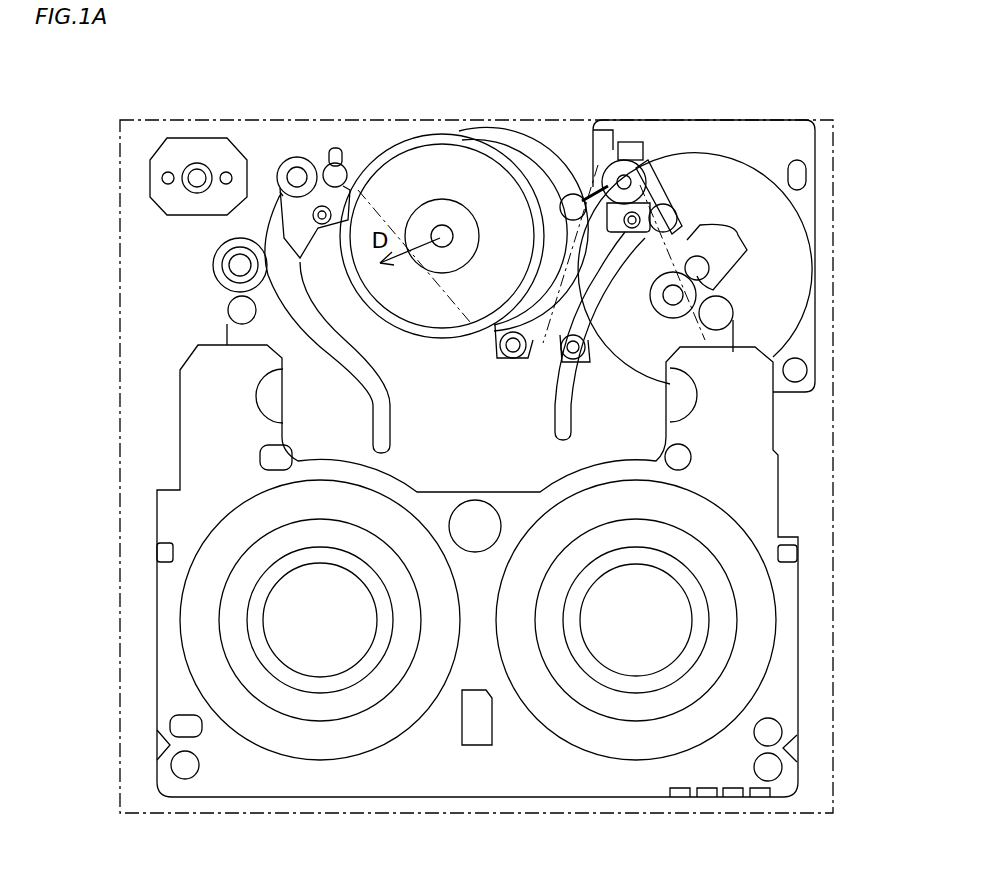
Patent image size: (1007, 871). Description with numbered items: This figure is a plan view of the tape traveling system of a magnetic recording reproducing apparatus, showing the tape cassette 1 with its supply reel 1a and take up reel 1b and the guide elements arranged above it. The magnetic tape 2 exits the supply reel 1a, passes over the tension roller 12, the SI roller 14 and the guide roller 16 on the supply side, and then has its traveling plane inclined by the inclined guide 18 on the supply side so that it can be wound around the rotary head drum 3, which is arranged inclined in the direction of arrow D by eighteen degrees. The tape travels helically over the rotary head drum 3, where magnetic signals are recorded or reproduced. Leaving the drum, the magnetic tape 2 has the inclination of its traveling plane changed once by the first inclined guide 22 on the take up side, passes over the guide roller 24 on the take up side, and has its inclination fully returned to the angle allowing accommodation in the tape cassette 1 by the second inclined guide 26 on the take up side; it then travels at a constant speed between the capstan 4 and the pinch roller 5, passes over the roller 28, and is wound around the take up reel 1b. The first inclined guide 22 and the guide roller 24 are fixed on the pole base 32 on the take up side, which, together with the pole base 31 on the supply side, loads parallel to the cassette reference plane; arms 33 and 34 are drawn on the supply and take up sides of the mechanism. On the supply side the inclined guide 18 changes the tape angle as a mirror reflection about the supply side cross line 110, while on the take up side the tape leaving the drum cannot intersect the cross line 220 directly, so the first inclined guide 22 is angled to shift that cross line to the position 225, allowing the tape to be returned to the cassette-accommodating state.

The tape cassette 1 is at (783, 692).
The supply reel 1a is at (200, 627).
The take up reel 1b is at (760, 603).
The magnetic tape 2 is at (257, 226).
The rotary head drum 3 is at (468, 162).
The capstan 4 is at (697, 268).
The pinch roller 5 is at (690, 293).
The tension roller 12 is at (237, 310).
The SI roller 14 is at (225, 264).
The guide roller on the supply side 16 is at (296, 157).
The inclined guide on the supply side 18 is at (344, 165).
The first inclined guide on the take up side 22 is at (571, 194).
The guide roller on the take up side 24 is at (648, 172).
The second inclined guide on the take up side 26 is at (675, 232).
The roller 28 is at (717, 315).
The pole base on the supply side 31 is at (276, 196).
The pole base on the take up side 32 is at (648, 191).
The supply-side loading arm 33 is at (330, 343).
The take-up-side loading arm 34 is at (567, 403).
The supply side cross line 110 is at (322, 136).
The cross line on the take up side 220 is at (602, 148).
The changed position of the cross line 225 is at (627, 148).